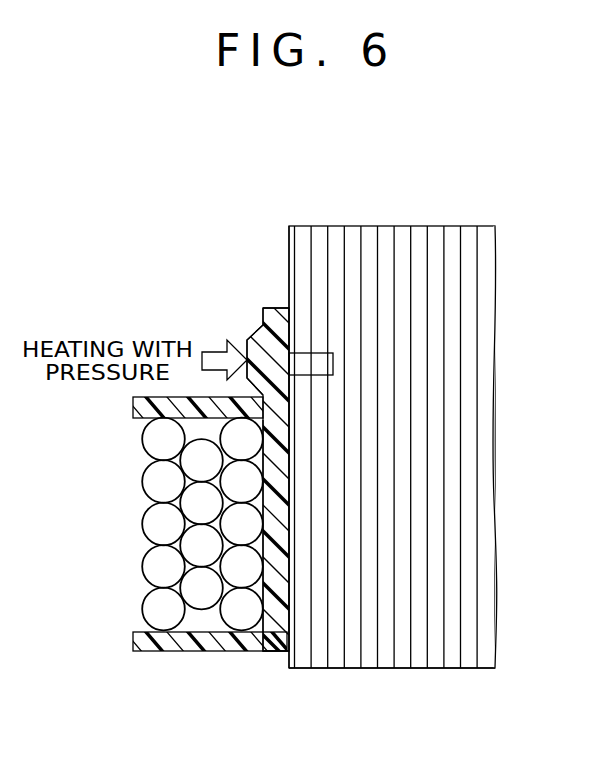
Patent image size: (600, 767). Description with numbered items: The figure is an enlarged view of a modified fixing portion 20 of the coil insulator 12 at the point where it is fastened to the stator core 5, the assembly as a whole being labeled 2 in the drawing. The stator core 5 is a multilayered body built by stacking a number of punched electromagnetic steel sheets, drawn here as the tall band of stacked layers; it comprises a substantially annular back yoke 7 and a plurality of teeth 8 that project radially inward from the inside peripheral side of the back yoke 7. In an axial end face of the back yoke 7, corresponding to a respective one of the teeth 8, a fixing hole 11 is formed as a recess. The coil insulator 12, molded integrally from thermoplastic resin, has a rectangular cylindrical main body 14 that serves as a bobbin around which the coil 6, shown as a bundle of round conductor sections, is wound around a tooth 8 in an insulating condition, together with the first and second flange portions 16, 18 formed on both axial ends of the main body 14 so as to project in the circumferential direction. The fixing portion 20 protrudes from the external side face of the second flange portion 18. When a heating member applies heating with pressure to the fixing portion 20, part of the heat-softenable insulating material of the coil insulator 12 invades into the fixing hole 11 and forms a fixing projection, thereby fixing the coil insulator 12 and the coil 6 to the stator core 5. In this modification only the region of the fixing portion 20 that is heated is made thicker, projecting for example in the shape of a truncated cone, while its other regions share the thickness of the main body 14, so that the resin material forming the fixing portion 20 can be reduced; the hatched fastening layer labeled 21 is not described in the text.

The laminated body 2 is at (373, 428).
The stator core 5 is at (363, 224).
The coil 6 is at (143, 521).
The back yoke 7 is at (289, 245).
The teeth 8 is at (403, 668).
The fixing hole 11 is at (302, 365).
The coil insulator 12 is at (262, 307).
The main body 14 is at (282, 556).
The first flange portion 16 is at (133, 644).
The second flange portion 18 is at (133, 408).
The fixing portion 20 is at (261, 320).
The heating jig 21 is at (250, 333).